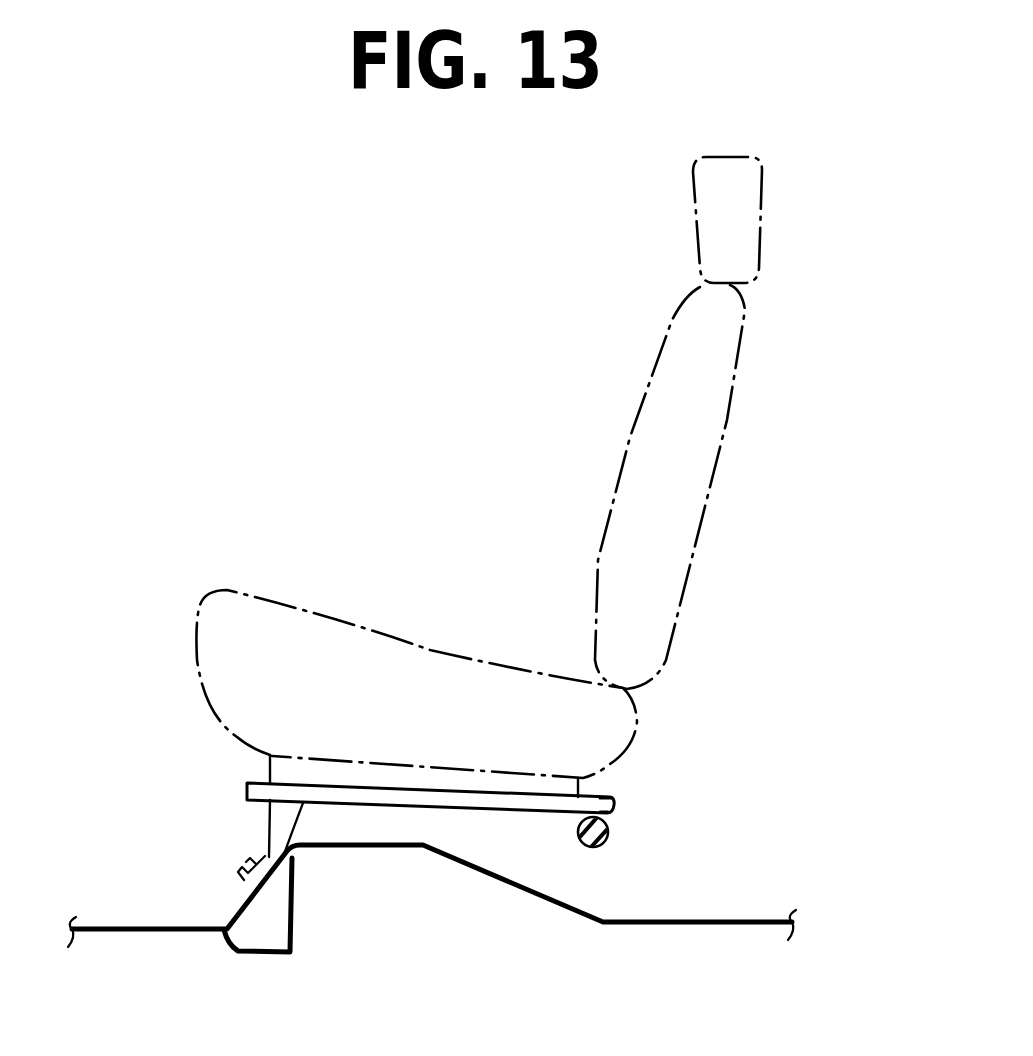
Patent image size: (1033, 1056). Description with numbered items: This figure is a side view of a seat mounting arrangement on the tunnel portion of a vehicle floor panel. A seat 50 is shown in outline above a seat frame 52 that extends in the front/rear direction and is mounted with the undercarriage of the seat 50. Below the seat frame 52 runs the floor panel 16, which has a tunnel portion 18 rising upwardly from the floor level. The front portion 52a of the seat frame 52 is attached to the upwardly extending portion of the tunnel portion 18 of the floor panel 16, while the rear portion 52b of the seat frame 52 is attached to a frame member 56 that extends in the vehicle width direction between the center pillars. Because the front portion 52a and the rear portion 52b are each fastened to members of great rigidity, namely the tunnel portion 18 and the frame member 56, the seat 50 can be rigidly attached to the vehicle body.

The seat 50 is at (626, 425).
The seat frame 52 is at (493, 812).
The front portion of the seat frame 52a is at (267, 862).
The rear portion of the seat frame 52b is at (623, 806).
The frame member 56 is at (610, 843).
The floor panel 16 is at (152, 930).
The tunnel portion 18 is at (359, 848).